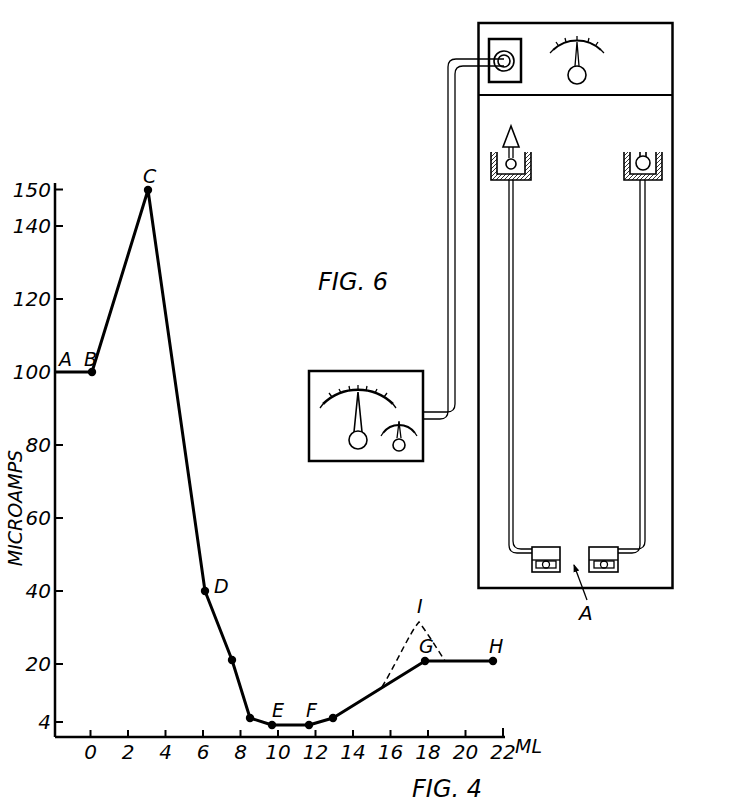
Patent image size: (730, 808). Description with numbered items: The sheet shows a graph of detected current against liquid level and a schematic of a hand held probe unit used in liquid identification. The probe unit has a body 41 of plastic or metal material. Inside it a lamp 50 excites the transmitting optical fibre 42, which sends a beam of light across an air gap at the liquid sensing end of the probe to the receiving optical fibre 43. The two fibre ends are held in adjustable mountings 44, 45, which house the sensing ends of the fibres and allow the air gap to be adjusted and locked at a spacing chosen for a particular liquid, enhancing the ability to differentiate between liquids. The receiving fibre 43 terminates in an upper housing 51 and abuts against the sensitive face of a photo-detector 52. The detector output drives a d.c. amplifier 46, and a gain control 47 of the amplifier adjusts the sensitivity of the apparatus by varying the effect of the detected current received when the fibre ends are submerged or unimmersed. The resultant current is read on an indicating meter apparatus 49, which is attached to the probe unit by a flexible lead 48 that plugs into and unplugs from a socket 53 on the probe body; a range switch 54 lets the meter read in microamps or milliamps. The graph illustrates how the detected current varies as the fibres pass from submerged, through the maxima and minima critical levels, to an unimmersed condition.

The body 41 is at (673, 292).
The transmitting optical fibre 42 is at (645, 318).
The receiving optical fibre 43 is at (507, 512).
The adjustable mounting 44 is at (555, 573).
The adjustable mounting 45 is at (600, 573).
The d.c. amplifier 46 is at (518, 140).
The gain control 47 is at (579, 36).
The flexible lead 48 is at (447, 103).
The indicating meter apparatus 49 is at (358, 452).
The lamp 50 is at (645, 150).
The upper housing 51 is at (491, 157).
The photo-detector 52 is at (506, 164).
The socket 53 is at (489, 45).
The range switch 54 is at (398, 455).